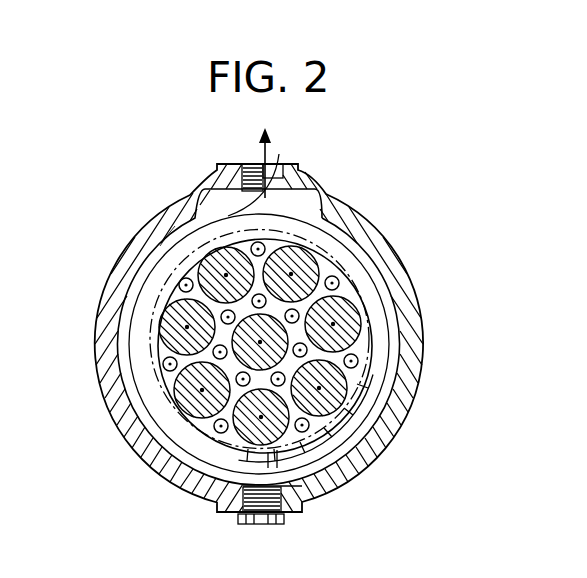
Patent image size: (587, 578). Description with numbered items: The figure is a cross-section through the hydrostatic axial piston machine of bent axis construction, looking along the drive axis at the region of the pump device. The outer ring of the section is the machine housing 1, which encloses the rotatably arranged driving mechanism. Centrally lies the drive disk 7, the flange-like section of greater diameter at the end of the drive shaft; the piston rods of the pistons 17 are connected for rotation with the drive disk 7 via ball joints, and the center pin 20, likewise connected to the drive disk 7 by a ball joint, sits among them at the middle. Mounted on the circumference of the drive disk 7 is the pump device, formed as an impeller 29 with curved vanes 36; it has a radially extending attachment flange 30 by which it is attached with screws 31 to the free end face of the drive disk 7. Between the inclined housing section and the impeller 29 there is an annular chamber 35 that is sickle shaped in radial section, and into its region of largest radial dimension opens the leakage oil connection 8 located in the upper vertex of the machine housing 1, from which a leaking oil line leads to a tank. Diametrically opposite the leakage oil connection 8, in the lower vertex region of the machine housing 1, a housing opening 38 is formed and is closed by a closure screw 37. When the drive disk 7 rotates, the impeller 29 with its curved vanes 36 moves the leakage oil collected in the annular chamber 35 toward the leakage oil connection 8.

The machine housing 1 is at (358, 218).
The drive disk 7 is at (167, 393).
The leakage oil connection 8 is at (260, 172).
The pistons 17 is at (343, 303).
The center pin 20 is at (332, 284).
The impeller 29 is at (148, 284).
The attachment flange 30 is at (259, 339).
The screws 31 is at (215, 350).
The annular chamber 35 is at (170, 232).
The curved vanes 36 is at (370, 413).
The closure screw 37 is at (262, 525).
The housing opening 38 is at (286, 519).